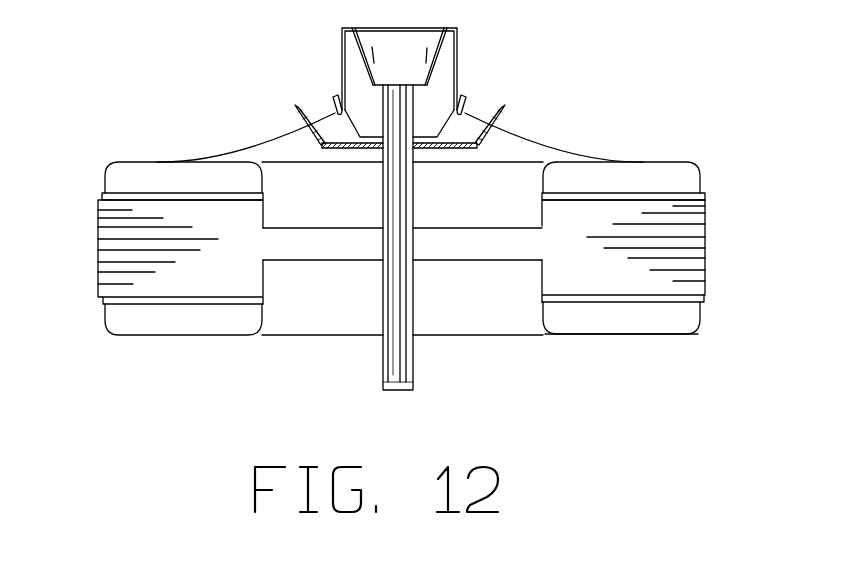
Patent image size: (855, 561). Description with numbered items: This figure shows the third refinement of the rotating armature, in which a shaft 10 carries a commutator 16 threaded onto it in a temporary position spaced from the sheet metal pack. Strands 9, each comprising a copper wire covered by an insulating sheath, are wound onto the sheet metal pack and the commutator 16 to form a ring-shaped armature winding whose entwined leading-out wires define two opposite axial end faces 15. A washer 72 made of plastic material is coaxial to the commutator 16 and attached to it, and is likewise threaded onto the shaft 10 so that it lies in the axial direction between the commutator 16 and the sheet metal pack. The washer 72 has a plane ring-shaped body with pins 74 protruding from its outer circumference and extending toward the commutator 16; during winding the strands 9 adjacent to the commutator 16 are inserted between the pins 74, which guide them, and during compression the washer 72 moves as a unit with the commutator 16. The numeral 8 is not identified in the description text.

The wheel 8 is at (668, 322).
The strands 9 is at (233, 155).
The shaft 10 is at (400, 373).
The axial end face 15 is at (153, 160).
The commutator 16 is at (443, 70).
The washer 72 is at (437, 147).
The pins 74 is at (303, 110).